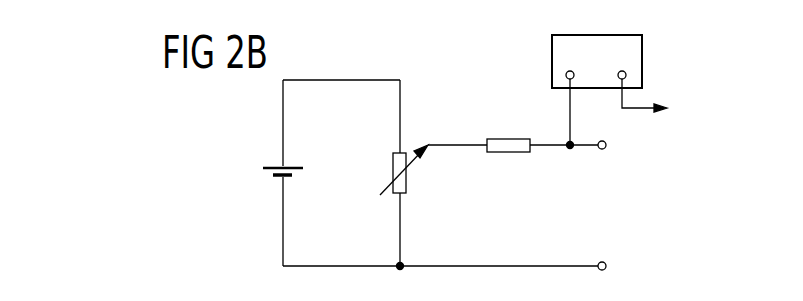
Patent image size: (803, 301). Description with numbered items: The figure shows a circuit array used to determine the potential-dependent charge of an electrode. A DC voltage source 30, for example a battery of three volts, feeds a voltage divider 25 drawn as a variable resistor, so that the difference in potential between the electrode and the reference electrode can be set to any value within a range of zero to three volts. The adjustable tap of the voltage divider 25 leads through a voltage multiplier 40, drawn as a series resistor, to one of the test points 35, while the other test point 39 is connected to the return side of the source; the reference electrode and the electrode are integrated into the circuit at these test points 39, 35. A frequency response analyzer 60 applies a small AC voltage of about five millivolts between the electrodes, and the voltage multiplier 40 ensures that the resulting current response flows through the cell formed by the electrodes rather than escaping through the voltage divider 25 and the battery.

The voltage divider 25 is at (406, 177).
The DC voltage source 30 is at (266, 171).
The test point 35 is at (606, 147).
The test point 39 is at (606, 268).
The voltage multiplier 40 is at (510, 153).
The frequency response analyzer 60 is at (552, 62).